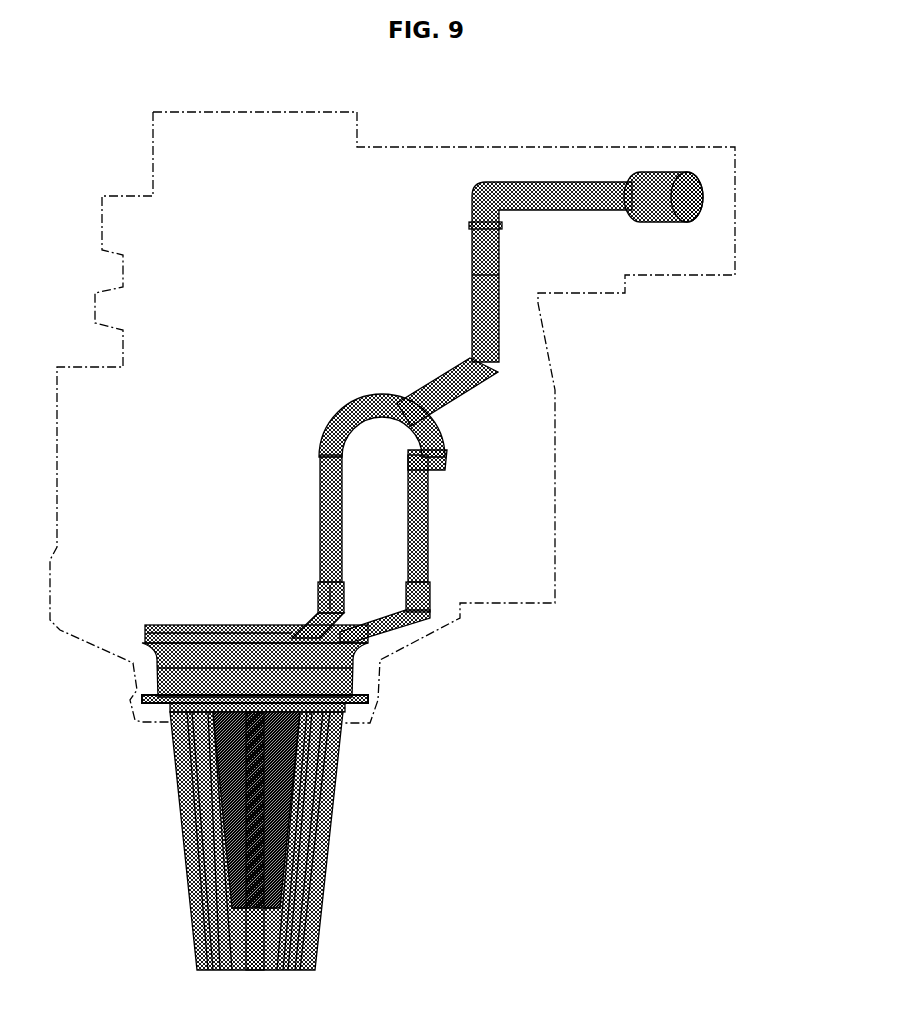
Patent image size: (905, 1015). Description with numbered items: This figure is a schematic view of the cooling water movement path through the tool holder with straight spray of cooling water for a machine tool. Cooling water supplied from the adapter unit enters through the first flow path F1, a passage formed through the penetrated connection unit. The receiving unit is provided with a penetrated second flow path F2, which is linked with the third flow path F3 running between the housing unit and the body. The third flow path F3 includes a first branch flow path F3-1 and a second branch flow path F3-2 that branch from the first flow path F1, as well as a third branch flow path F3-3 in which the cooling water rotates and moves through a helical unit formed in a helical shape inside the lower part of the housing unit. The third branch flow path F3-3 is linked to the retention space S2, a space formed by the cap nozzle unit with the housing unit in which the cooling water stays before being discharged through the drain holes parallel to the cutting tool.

The first flow path F1 is at (490, 337).
The second flow path F2 is at (417, 392).
The third flow path F3 is at (553, 548).
The 3-1 flow path F3-1 is at (428, 484).
The 3-2 flow path F3-2 is at (343, 535).
The 3-3 flow path F3-3 is at (430, 610).
The retention space S2 is at (345, 707).